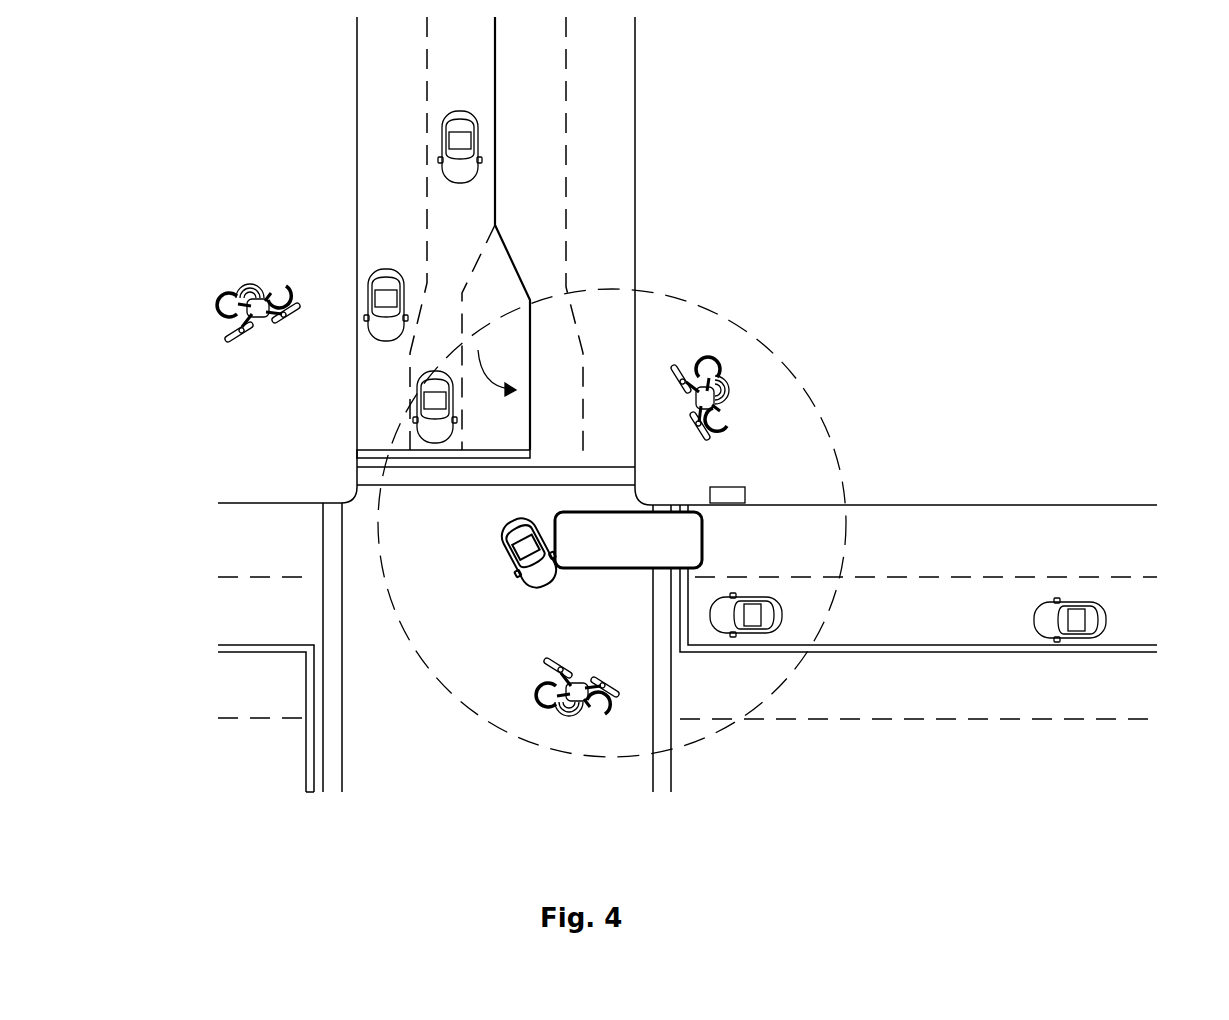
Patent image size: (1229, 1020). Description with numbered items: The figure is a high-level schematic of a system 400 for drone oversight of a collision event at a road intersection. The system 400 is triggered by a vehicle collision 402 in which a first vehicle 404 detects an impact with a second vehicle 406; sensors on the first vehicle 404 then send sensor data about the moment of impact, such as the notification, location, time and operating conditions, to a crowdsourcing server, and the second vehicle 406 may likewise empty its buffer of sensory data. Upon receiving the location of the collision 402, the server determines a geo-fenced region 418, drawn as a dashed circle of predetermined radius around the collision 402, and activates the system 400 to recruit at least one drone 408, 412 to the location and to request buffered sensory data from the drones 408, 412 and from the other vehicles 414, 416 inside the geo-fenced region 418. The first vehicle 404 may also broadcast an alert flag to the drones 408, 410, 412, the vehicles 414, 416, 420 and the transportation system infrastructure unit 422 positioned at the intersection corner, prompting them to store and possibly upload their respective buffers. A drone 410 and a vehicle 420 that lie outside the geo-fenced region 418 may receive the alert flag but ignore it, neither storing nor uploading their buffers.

The system 400 is at (222, 103).
The vehicle collision 402 is at (583, 583).
The first vehicle 404 is at (541, 590).
The second vehicle 406 is at (602, 548).
The drone 408 is at (702, 404).
The drone 410 is at (262, 316).
The drone 412 is at (603, 698).
The other vehicle 414 is at (434, 445).
The other vehicle 416 is at (730, 633).
The geo-fenced region 418 is at (702, 740).
The vehicle 420 is at (1048, 626).
The transportation system infrastructure unit 422 is at (745, 493).